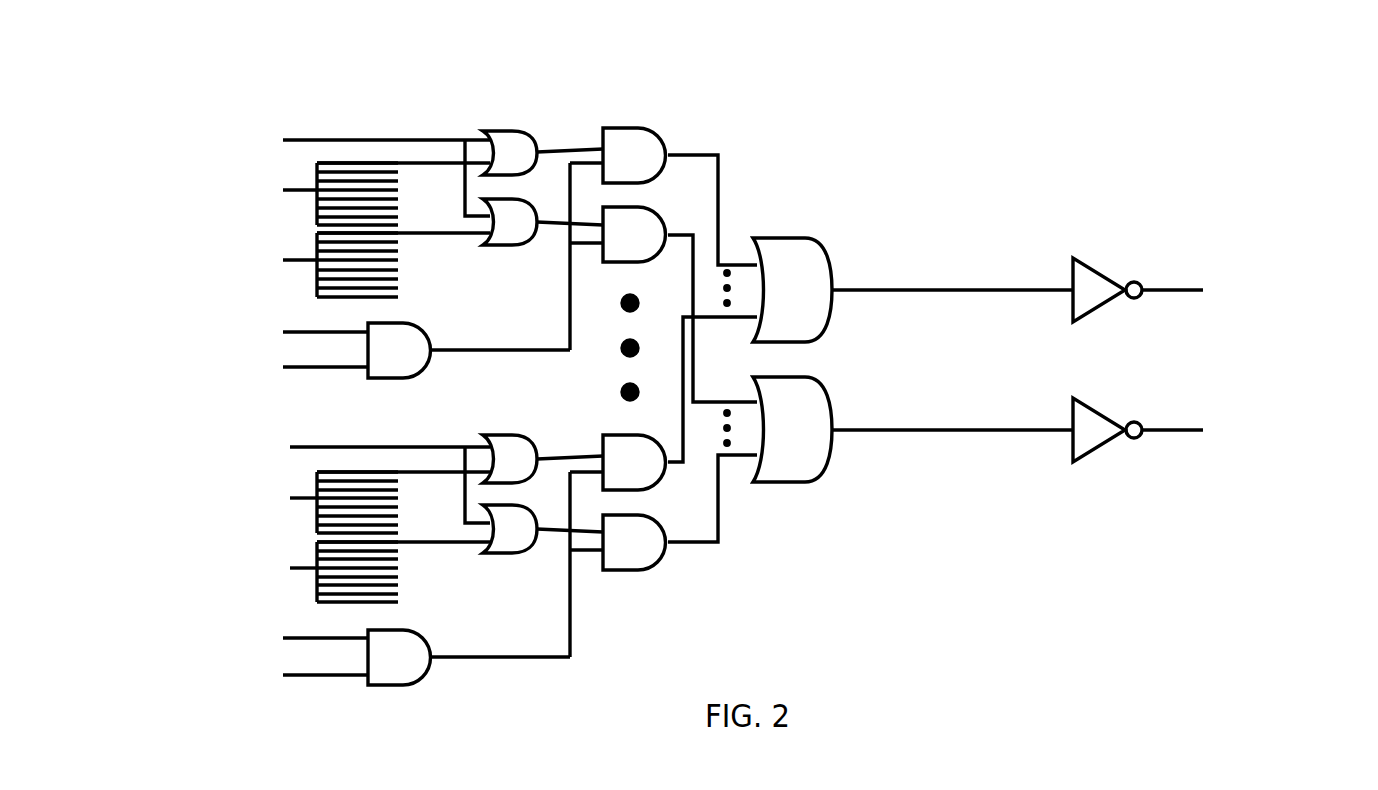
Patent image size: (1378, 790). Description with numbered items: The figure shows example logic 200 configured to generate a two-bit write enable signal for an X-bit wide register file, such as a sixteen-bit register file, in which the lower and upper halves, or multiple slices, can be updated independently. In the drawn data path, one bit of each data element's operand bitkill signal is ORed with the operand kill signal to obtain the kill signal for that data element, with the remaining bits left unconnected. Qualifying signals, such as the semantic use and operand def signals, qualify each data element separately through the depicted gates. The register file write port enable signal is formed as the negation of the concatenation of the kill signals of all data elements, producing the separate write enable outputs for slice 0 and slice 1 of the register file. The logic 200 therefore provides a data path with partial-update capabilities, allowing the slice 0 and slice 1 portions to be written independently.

The logic 200 is at (1280, 76).
The bit 0 slice (BITKILL[0] bus, OR gate and inverter for C1[0]) 0 is at (821, 348).
The bit 1 slice (BITKILL[1] bus, OR gate and inverter for C1[1]) 1 is at (821, 417).